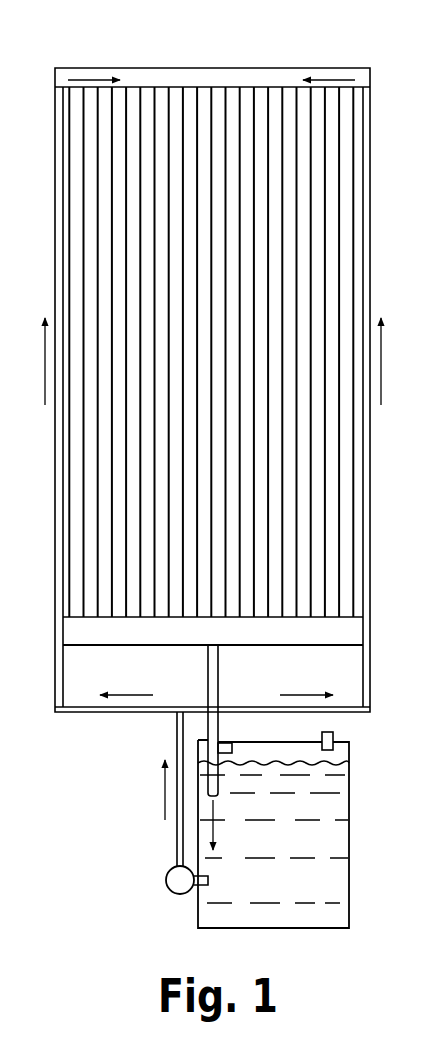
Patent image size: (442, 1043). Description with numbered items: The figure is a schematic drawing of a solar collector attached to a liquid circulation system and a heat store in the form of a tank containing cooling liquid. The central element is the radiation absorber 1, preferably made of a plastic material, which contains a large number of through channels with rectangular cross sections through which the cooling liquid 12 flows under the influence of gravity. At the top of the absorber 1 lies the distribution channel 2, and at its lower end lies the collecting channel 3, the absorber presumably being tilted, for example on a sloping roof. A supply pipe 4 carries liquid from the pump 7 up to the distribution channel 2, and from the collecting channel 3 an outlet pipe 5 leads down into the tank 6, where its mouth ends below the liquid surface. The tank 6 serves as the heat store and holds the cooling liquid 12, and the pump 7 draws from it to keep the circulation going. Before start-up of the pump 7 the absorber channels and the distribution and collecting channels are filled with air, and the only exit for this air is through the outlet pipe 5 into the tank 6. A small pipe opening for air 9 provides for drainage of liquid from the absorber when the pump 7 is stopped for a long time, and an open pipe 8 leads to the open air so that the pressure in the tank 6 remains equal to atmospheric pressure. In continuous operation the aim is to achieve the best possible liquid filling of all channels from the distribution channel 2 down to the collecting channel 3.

The radiation absorber 1 is at (278, 291).
The distribution channel 2 is at (218, 75).
The collecting channel 3 is at (307, 632).
The supply pipe 4 is at (55, 665).
The outlet pipe 5 is at (212, 680).
The tank 6 is at (349, 845).
The pump 7 is at (170, 878).
The open pipe 8 is at (333, 733).
The pipe opening for air 9 is at (232, 752).
The cooling liquid 12 is at (317, 895).